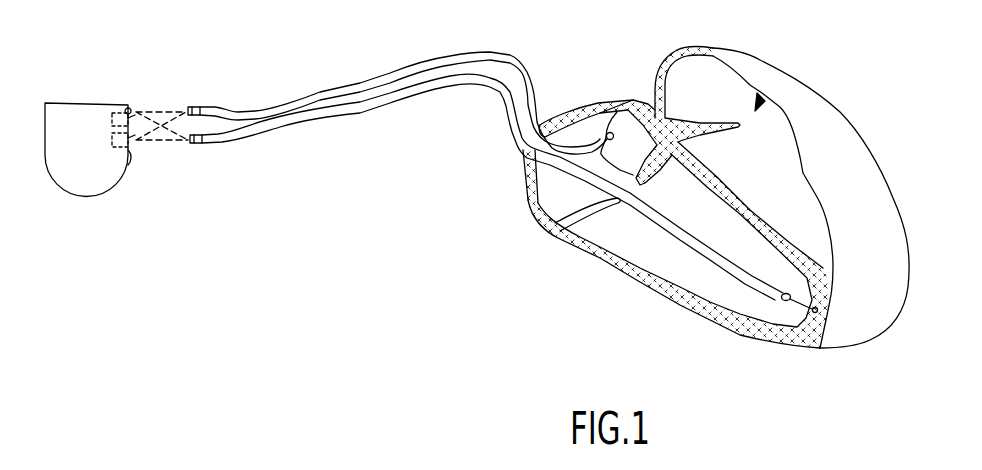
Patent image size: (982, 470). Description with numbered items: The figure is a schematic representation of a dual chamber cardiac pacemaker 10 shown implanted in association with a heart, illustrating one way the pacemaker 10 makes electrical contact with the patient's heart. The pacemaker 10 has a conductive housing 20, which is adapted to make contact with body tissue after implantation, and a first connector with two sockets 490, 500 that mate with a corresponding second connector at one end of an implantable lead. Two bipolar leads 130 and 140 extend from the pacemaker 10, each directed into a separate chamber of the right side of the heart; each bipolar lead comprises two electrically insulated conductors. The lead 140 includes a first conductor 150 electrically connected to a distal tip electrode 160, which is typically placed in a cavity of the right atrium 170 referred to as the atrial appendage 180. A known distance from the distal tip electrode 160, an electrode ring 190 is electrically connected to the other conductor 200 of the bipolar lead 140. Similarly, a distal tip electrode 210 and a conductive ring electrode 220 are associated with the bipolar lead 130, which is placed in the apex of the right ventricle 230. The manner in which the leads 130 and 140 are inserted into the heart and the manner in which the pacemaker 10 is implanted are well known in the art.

The pacemaker 10 is at (116, 151).
The conductive housing 20 is at (77, 106).
The socket 500 is at (125, 105).
The socket 490 is at (128, 165).
The bipolar lead 130 is at (504, 233).
The bipolar lead 140 is at (421, 99).
The first conductor 150 is at (597, 107).
The distal tip electrode 160 is at (614, 106).
The right atrium 170 is at (560, 183).
The atrial appendage 180 is at (636, 103).
The electrode ring 190 is at (614, 138).
The other conductor 200 is at (643, 184).
The distal tip electrode 210 is at (790, 336).
The conductive ring electrode 220 is at (770, 303).
The right ventricle 230 is at (633, 252).